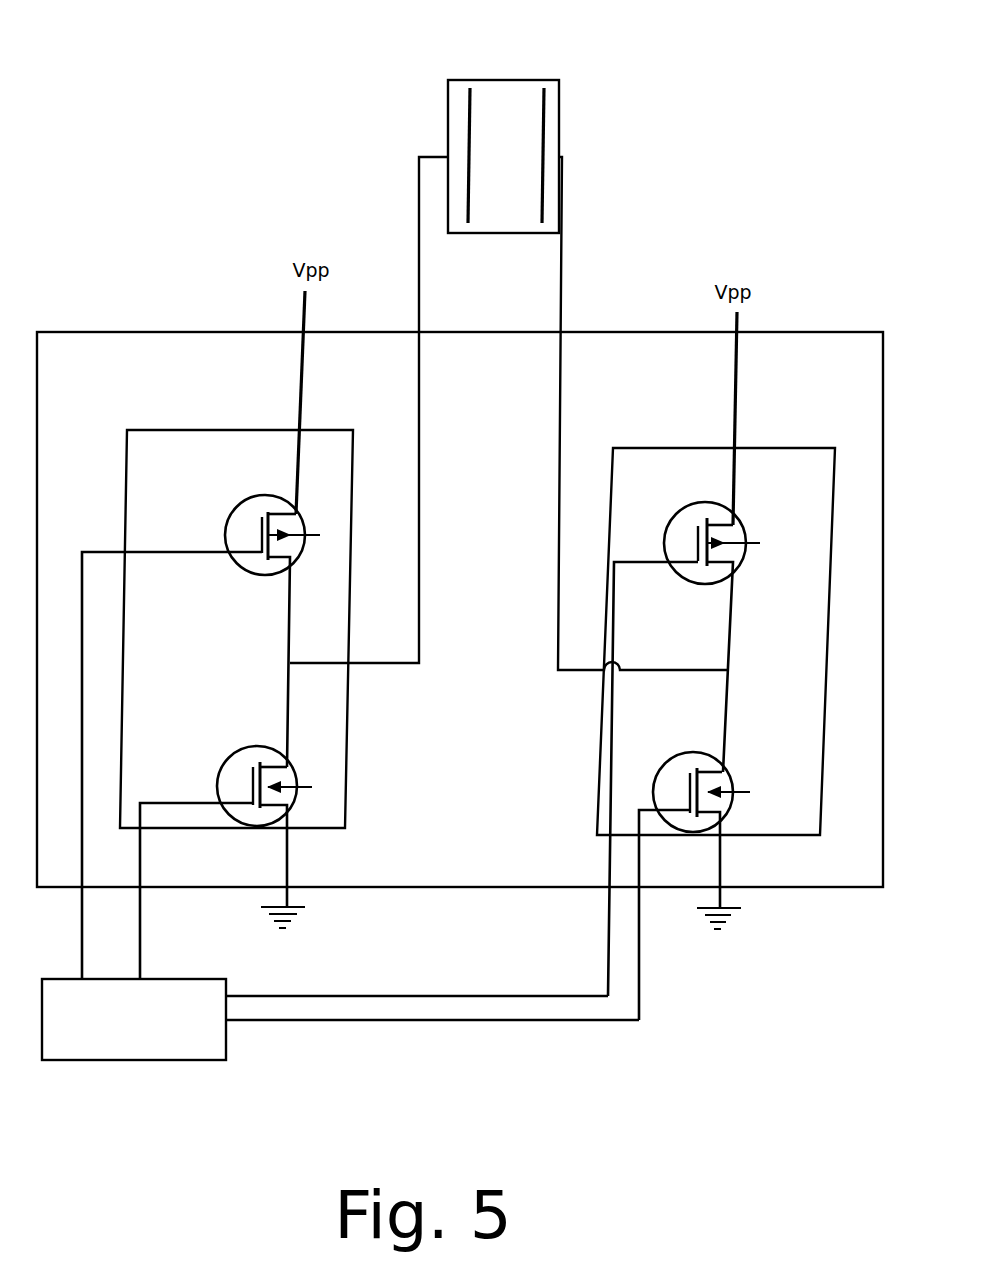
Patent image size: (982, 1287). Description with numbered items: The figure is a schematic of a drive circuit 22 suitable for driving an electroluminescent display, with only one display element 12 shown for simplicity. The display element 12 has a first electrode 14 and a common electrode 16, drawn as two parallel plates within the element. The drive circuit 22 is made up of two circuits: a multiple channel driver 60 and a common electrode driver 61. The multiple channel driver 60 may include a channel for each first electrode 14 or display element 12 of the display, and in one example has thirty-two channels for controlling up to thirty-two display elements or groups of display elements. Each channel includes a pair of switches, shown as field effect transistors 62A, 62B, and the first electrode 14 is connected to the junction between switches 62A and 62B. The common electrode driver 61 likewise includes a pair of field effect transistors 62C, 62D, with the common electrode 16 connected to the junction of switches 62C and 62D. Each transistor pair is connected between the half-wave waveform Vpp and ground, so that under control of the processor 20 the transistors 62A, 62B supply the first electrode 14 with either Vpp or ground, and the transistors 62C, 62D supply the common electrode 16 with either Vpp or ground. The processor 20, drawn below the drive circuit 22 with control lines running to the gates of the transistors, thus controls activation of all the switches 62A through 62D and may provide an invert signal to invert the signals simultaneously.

The display element 12 is at (523, 248).
The first electrode 14 is at (469, 145).
The common electrode 16 is at (543, 138).
The processor 20 is at (170, 979).
The drive circuit 22 is at (205, 318).
The multiple channel driver 60 is at (183, 430).
The common electrode driver 61 is at (792, 448).
The field effect transistor 62A is at (253, 499).
The field effect transistor 62B is at (243, 751).
The field effect transistor 62C is at (740, 520).
The field effect transistor 62D is at (725, 770).